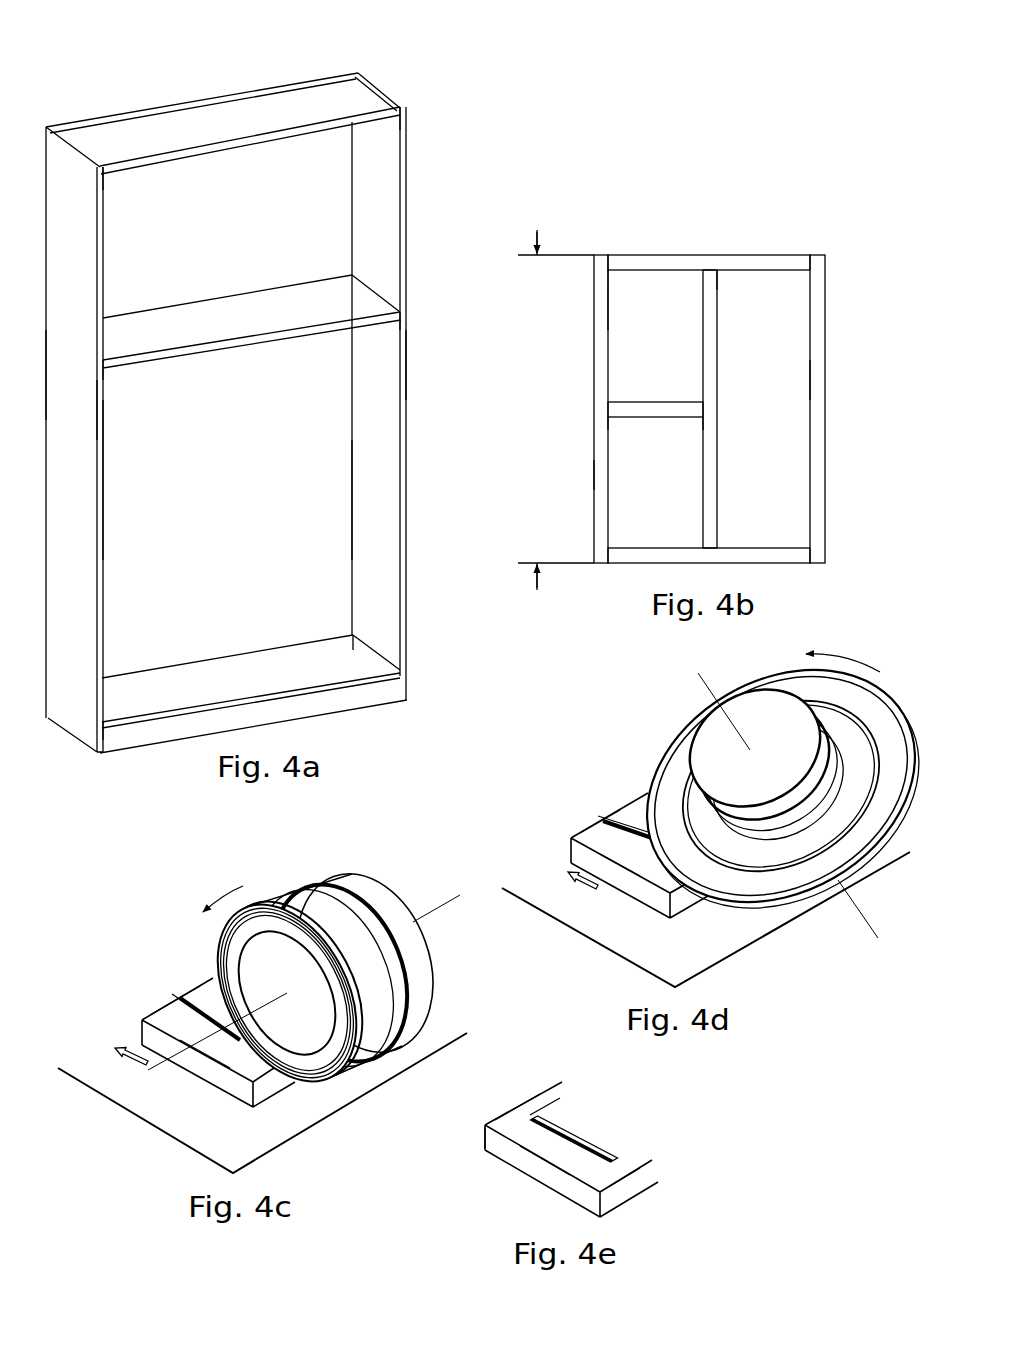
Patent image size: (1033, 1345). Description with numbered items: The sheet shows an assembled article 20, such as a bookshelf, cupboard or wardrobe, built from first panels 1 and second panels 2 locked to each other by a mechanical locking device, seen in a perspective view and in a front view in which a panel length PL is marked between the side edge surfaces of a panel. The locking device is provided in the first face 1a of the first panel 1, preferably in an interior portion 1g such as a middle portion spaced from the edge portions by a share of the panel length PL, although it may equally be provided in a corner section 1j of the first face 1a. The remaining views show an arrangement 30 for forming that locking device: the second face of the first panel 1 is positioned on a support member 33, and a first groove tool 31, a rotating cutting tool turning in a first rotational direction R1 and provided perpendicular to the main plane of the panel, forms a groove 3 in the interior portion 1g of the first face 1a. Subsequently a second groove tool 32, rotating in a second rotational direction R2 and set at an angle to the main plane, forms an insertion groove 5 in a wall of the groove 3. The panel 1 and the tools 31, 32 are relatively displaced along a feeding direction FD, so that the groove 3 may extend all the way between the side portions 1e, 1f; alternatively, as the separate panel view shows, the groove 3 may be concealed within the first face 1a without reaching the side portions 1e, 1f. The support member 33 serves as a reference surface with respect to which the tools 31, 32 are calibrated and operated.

In FIG. 4A, the assembled article 20 is at (181, 66).
In FIG. 4B, the assembled article 20 is at (669, 222).
In FIG. 4A, the second panel 2 is at (219, 137).
In FIG. 4B, the second panel 2 is at (764, 250).
In FIG. 4A, the first panel 1 is at (64, 426).
In FIG. 4B, the first panel 1 is at (592, 347).
In FIG. 4C, the first panel 1 is at (161, 1008).
In FIG. 4D, the first panel 1 is at (587, 828).
In FIG. 4E, the first panel 1 is at (508, 1117).
In FIG. 4A, the first face 1a is at (103, 530).
In FIG. 4B, the first face 1a is at (612, 310).
In FIG. 4C, the first face 1a is at (153, 1017).
In FIG. 4D, the first face 1a is at (585, 840).
In FIG. 4E, the first face 1a is at (497, 1125).
In FIG. 4A, the side portion 1e is at (100, 424).
In FIG. 4B, the side portion 1e is at (605, 472).
In FIG. 4E, the side portion 1e is at (630, 1190).
In FIG. 4A, the side portion 1f is at (46, 380).
In FIG. 4E, the side portion 1f is at (484, 1138).
In FIG. 4A, the interior portion 1g is at (109, 378).
In FIG. 4B, the interior portion 1g is at (730, 280).
In FIG. 4C, the interior portion 1g is at (206, 1055).
In FIG. 4D, the interior portion 1g is at (630, 871).
In FIG. 4E, the interior portion 1g is at (547, 1162).
In FIG. 4A, the corner section 1j is at (110, 178).
In FIG. 4B, the corner section 1j is at (618, 280).
In FIG. 4C, the groove 3 is at (178, 995).
In FIG. 4D, the groove 3 is at (600, 815).
In FIG. 4E, the groove 3 is at (534, 1115).
In FIG. 4D, the insertion groove 5 is at (705, 885).
In FIG. 4E, the insertion groove 5 is at (571, 1127).
In FIG. 4C, the arrangement 30 is at (303, 851).
In FIG. 4D, the arrangement 30 is at (872, 862).
In FIG. 4C, the first groove tool 31 is at (402, 872).
In FIG. 4D, the first groove tool 31 is at (773, 802).
In FIG. 4C, the second groove tool 32 is at (304, 991).
In FIG. 4D, the second groove tool 32 is at (647, 727).
In FIG. 4C, the support member 33 is at (81, 1060).
In FIG. 4D, the support member 33 is at (525, 880).
In FIG. 4B, the panel length PL is at (549, 410).
In FIG. 4C, the feeding direction FD is at (128, 1066).
In FIG. 4D, the feeding direction FD is at (578, 892).
In FIG. 4C, the first rotational direction R1 is at (219, 889).
In FIG. 4D, the second rotational direction R2 is at (843, 652).